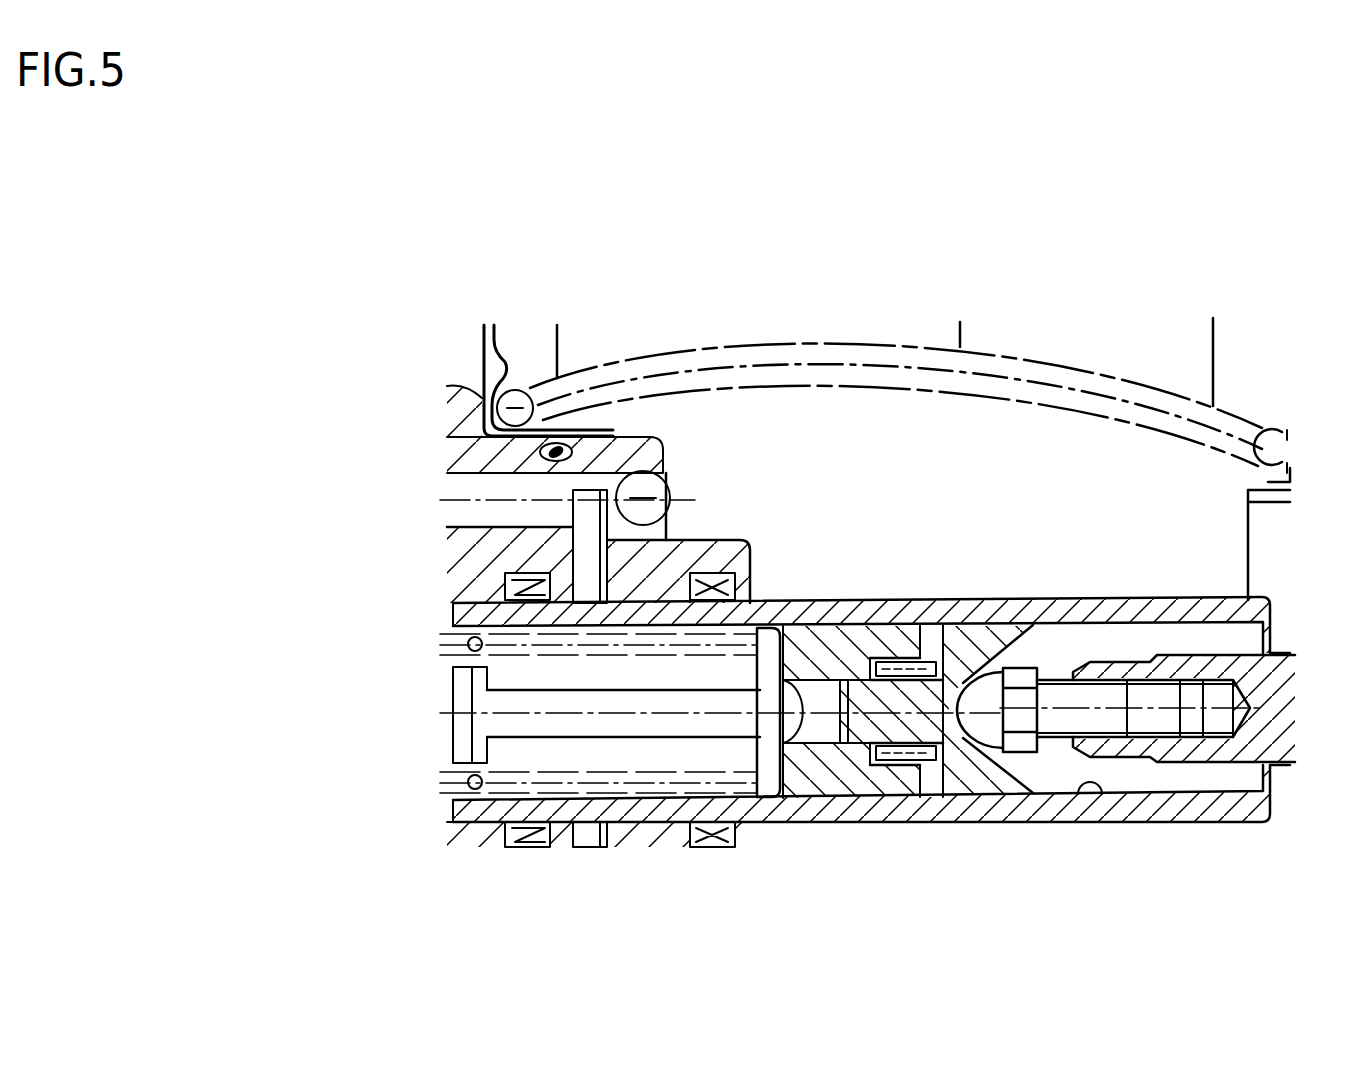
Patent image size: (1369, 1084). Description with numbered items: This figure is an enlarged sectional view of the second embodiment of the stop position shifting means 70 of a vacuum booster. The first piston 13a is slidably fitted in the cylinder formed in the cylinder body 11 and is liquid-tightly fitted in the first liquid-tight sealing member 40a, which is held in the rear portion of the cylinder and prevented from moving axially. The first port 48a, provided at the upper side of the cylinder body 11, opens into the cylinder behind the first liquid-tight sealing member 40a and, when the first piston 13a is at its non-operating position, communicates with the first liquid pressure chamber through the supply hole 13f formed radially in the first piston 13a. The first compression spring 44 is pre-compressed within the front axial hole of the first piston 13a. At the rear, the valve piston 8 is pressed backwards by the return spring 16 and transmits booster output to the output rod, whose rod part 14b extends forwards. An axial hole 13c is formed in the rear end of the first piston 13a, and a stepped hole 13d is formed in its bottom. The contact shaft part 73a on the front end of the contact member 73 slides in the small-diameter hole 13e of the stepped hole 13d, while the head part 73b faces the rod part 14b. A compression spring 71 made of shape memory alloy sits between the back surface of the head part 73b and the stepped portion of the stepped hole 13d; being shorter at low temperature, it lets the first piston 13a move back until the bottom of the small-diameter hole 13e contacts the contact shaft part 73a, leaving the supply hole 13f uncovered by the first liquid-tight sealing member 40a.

The valve piston 8 is at (1292, 490).
The cylinder body 11 is at (683, 556).
The first piston 13a is at (800, 792).
The axial hole 13c is at (1108, 795).
The stepped hole 13d is at (887, 770).
The small-diameter hole 13e is at (847, 750).
The supply hole 13f is at (543, 622).
The rod part 14b is at (1237, 745).
The return spring 16 is at (818, 343).
The first liquid-tight sealing member 40a is at (503, 582).
The first compression spring 44 is at (597, 790).
The first port 48a is at (590, 580).
The stop position shifting means 70 is at (897, 652).
The compression spring 71 is at (930, 772).
The contact member 73 is at (970, 760).
The contact shaft part 73a is at (860, 685).
The head part 73b is at (968, 648).